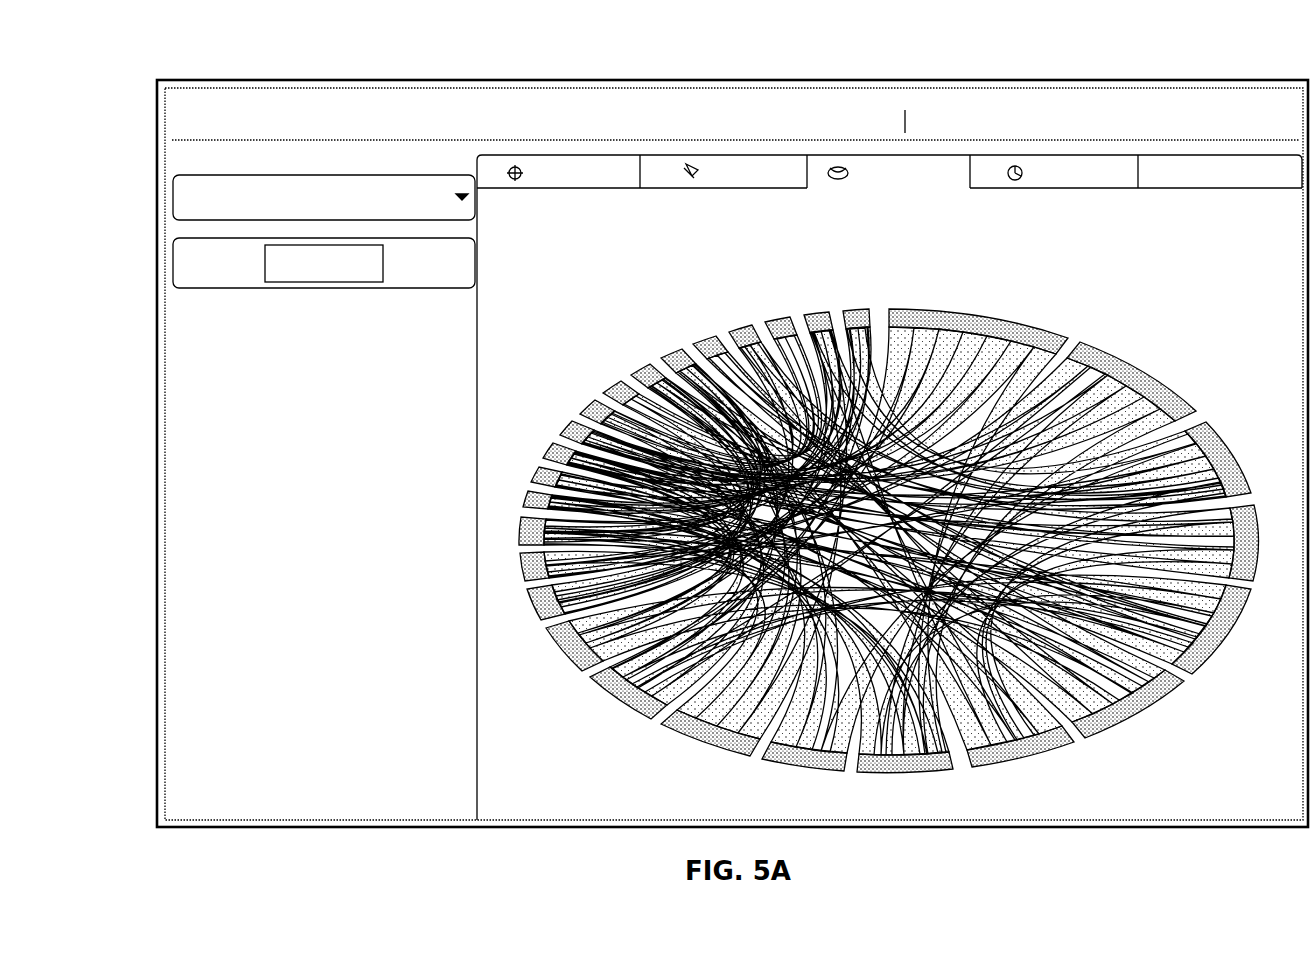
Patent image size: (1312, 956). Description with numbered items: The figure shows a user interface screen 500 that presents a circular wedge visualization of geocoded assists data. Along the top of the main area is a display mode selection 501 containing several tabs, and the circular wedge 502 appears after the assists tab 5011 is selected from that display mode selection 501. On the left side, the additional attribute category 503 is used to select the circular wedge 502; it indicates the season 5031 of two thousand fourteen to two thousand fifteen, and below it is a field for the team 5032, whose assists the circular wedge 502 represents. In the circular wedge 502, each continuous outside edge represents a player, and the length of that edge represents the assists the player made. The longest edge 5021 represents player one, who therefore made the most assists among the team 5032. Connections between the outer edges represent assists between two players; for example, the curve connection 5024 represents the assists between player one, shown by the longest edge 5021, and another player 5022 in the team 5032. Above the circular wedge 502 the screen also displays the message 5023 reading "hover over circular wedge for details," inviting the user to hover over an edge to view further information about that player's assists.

The user interface screen 500 is at (203, 42).
The display mode selection 501 is at (889, 111).
The assists tab 5011 is at (891, 146).
The circular wedge 502 is at (907, 506).
The longest edge 5021 is at (1008, 330).
The another player 5022 is at (1258, 505).
The message 5023 is at (1223, 240).
The curve connection 5024 is at (1256, 580).
The additional attribute category 503 is at (277, 166).
The season 5031 is at (172, 197).
The team 1 5032 is at (248, 290).